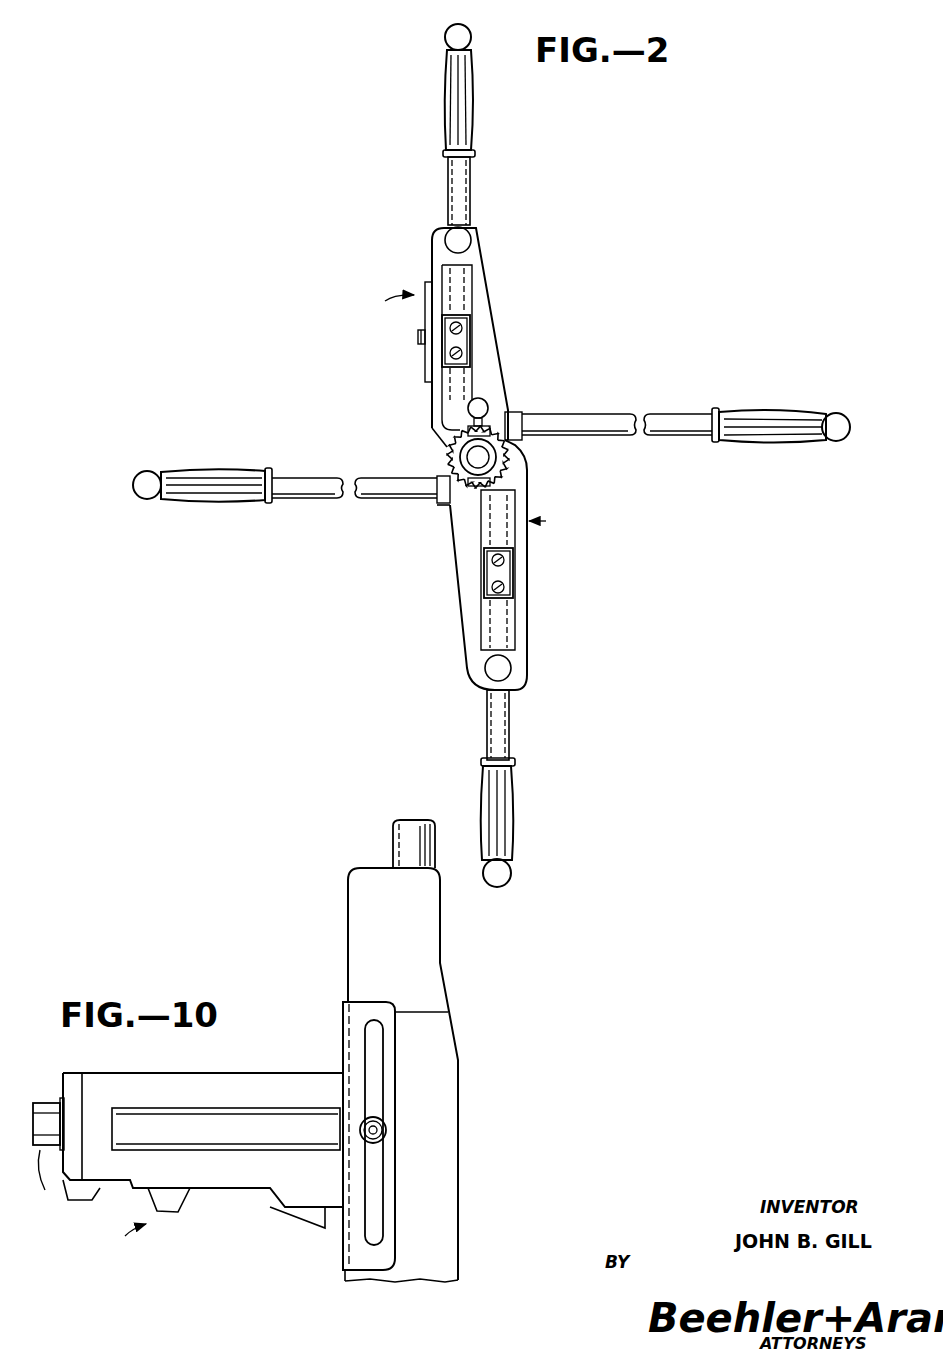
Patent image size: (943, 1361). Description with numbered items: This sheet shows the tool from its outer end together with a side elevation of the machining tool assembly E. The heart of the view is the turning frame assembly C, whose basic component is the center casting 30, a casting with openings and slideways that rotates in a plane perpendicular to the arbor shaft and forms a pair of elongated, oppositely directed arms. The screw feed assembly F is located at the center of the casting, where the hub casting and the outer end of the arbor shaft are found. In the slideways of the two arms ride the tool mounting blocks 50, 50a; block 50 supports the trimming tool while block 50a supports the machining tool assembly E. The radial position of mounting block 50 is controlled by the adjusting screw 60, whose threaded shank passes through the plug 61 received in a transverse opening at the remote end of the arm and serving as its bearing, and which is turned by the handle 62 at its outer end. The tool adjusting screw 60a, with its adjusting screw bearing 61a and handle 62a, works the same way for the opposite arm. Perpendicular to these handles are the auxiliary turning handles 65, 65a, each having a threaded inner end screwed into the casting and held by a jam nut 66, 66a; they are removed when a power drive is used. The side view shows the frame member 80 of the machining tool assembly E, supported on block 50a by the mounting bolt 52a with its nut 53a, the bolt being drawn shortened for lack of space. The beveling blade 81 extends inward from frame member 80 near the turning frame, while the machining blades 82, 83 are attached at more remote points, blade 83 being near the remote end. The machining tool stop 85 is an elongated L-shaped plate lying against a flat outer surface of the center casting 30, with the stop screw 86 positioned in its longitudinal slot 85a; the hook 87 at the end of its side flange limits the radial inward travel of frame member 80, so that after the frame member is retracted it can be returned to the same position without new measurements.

In FIG. 2, the center casting 30 is at (485, 368).
In FIG. 10, the center casting 30 is at (430, 946).
In FIG. 2, the tool mounting block 50 is at (497, 576).
In FIG. 2, the tool mounting block 50a is at (460, 338).
In FIG. 2, the adjusting screw 60 is at (497, 721).
In FIG. 2, the tool adjusting screw 60a is at (472, 194).
In FIG. 10, the tool adjusting screw 60a is at (400, 839).
In FIG. 2, the plug 61 is at (503, 664).
In FIG. 2, the adjusting screw bearing 61a is at (462, 243).
In FIG. 2, the handle 62 is at (500, 808).
In FIG. 2, the handle 62a is at (468, 123).
In FIG. 2, the auxiliary turning handle 65 is at (335, 500).
In FIG. 2, the auxiliary turning handle 65a is at (690, 416).
In FIG. 2, the jam nut 66 is at (440, 505).
In FIG. 2, the jam nut 66a is at (518, 410).
In FIG. 2, the machining tool stop 85 is at (428, 360).
In FIG. 10, the machining tool stop 85 is at (405, 1012).
In FIG. 10, the longitudinal slot 85a is at (378, 1073).
In FIG. 2, the stop screw 86 is at (418, 336).
In FIG. 10, the stop screw 86 is at (385, 1123).
In FIG. 10, the frame member 80 is at (195, 1076).
In FIG. 10, the beveling blade 81 is at (280, 1208).
In FIG. 10, the machining blade 82 is at (170, 1196).
In FIG. 10, the machining blade 83 is at (80, 1201).
In FIG. 10, the hook 87 is at (345, 1258).
In FIG. 10, the mounting bolt 52a is at (38, 1100).
In FIG. 10, the nut 53a is at (78, 1196).
In FIG. 2, the turning frame assembly C is at (464, 411).
In FIG. 2, the screw feed assembly F is at (500, 457).
In FIG. 10, the machining tool assembly E is at (126, 1235).